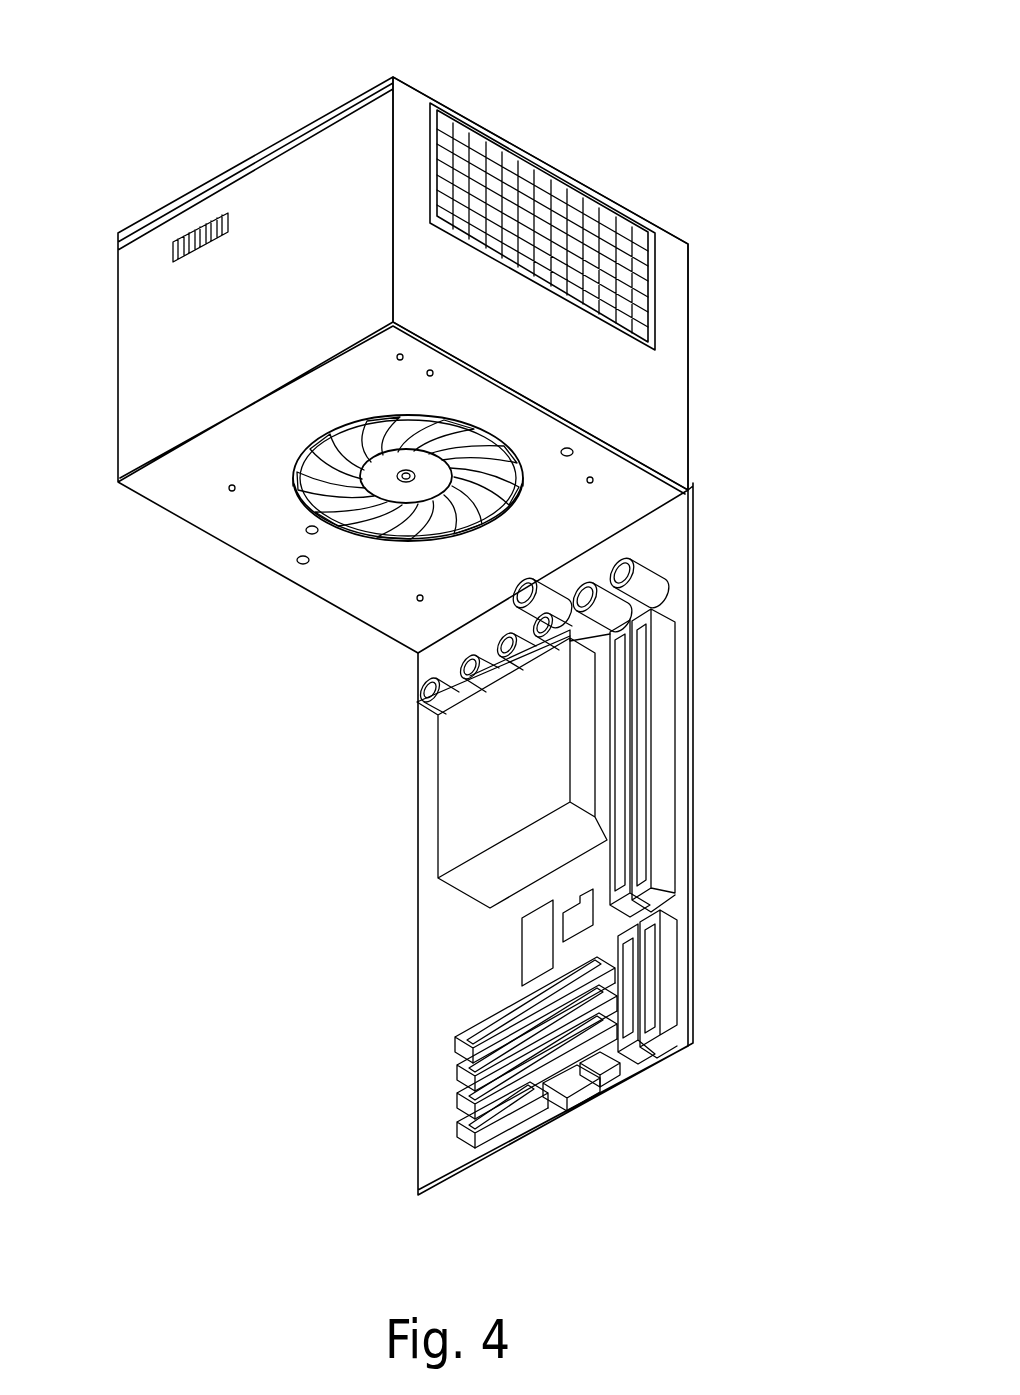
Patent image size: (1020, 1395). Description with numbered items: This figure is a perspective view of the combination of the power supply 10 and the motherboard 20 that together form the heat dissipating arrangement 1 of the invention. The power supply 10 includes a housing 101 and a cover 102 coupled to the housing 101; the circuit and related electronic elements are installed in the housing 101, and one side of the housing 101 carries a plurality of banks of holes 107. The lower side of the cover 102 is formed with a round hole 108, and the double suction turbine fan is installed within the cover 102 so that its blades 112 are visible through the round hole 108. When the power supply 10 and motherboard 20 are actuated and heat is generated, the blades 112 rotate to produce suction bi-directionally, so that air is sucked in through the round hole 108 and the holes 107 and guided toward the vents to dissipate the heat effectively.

The computer system 1 is at (749, 150).
The power supply 10 is at (690, 348).
The motherboard 20 is at (690, 776).
The housing 101 is at (415, 107).
The cover 102 is at (323, 157).
The banks of holes 107 is at (565, 210).
The round hole 108 is at (372, 541).
The blades 112 is at (313, 512).